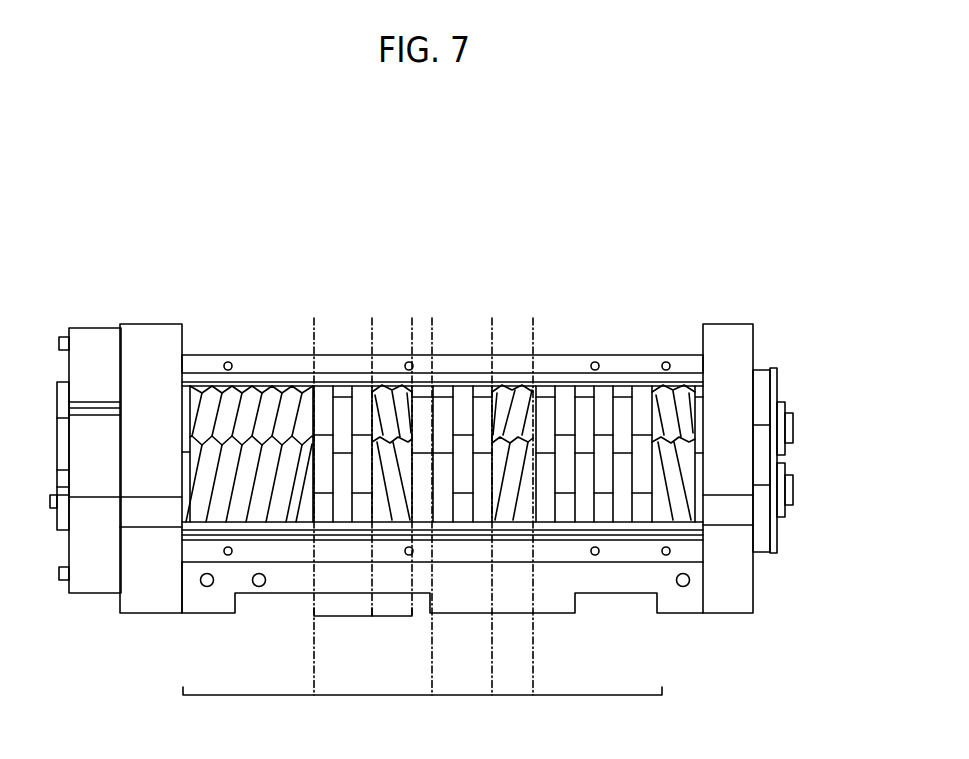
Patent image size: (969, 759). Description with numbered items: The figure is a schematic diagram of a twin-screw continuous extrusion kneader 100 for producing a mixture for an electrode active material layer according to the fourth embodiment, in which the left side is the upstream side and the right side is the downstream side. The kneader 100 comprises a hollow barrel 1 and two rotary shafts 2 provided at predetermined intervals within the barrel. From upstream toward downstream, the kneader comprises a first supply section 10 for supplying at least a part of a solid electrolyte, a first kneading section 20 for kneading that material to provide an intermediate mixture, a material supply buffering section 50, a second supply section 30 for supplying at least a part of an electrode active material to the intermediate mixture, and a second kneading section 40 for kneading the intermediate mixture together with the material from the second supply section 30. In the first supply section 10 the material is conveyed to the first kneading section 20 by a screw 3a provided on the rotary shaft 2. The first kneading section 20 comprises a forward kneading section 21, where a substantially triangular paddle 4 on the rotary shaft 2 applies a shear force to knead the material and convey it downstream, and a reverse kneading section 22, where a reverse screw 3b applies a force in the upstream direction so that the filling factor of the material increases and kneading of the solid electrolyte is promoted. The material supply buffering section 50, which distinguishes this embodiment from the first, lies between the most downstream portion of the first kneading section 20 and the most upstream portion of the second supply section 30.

The twin-screw continuous extrusion kneader 100 is at (80, 240).
The hollow barrel 1 is at (150, 338).
The rotary shaft 2 is at (795, 427).
The screw 3a is at (243, 397).
The reverse screw 3b is at (385, 395).
The paddle 4 is at (321, 395).
The first supply section 10 is at (248, 695).
The first kneading section 20 is at (372, 695).
The forward kneading section 21 is at (342, 616).
The reverse kneading section 22 is at (392, 616).
The second supply section 30 is at (512, 695).
The second kneading section 40 is at (597, 695).
The material supply buffering section 50 is at (462, 695).